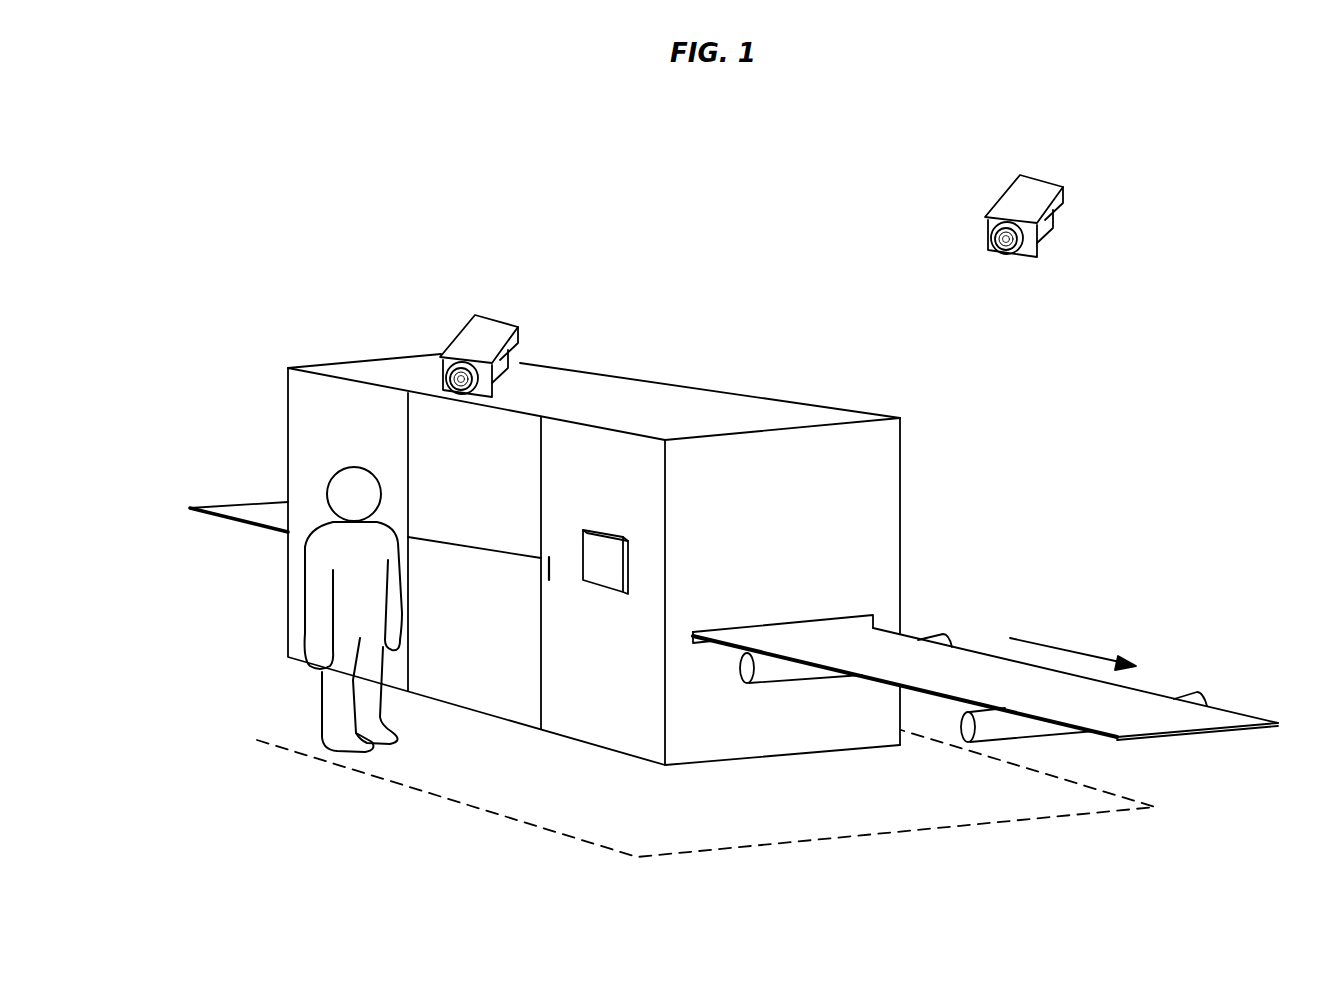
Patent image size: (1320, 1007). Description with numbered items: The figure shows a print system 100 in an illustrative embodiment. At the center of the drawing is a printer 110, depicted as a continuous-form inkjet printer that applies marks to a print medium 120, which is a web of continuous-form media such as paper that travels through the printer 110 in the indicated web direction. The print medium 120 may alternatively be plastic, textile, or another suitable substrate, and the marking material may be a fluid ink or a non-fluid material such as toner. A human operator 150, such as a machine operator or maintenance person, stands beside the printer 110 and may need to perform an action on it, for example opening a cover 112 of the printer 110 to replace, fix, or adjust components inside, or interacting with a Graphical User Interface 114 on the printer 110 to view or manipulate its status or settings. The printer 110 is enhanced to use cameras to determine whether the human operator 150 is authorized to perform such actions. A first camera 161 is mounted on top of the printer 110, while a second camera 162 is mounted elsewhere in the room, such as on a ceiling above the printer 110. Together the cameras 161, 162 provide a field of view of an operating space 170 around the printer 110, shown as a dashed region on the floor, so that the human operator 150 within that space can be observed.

The print system 100 is at (538, 133).
The printer 110 is at (725, 407).
The cover 112 is at (513, 465).
The Graphical User Interface (GUI) 114 is at (603, 544).
The print medium 120 is at (893, 672).
The human operator 150 is at (295, 692).
The first camera 161 is at (497, 316).
The second camera 162 is at (1002, 195).
The operating space 170 is at (472, 792).